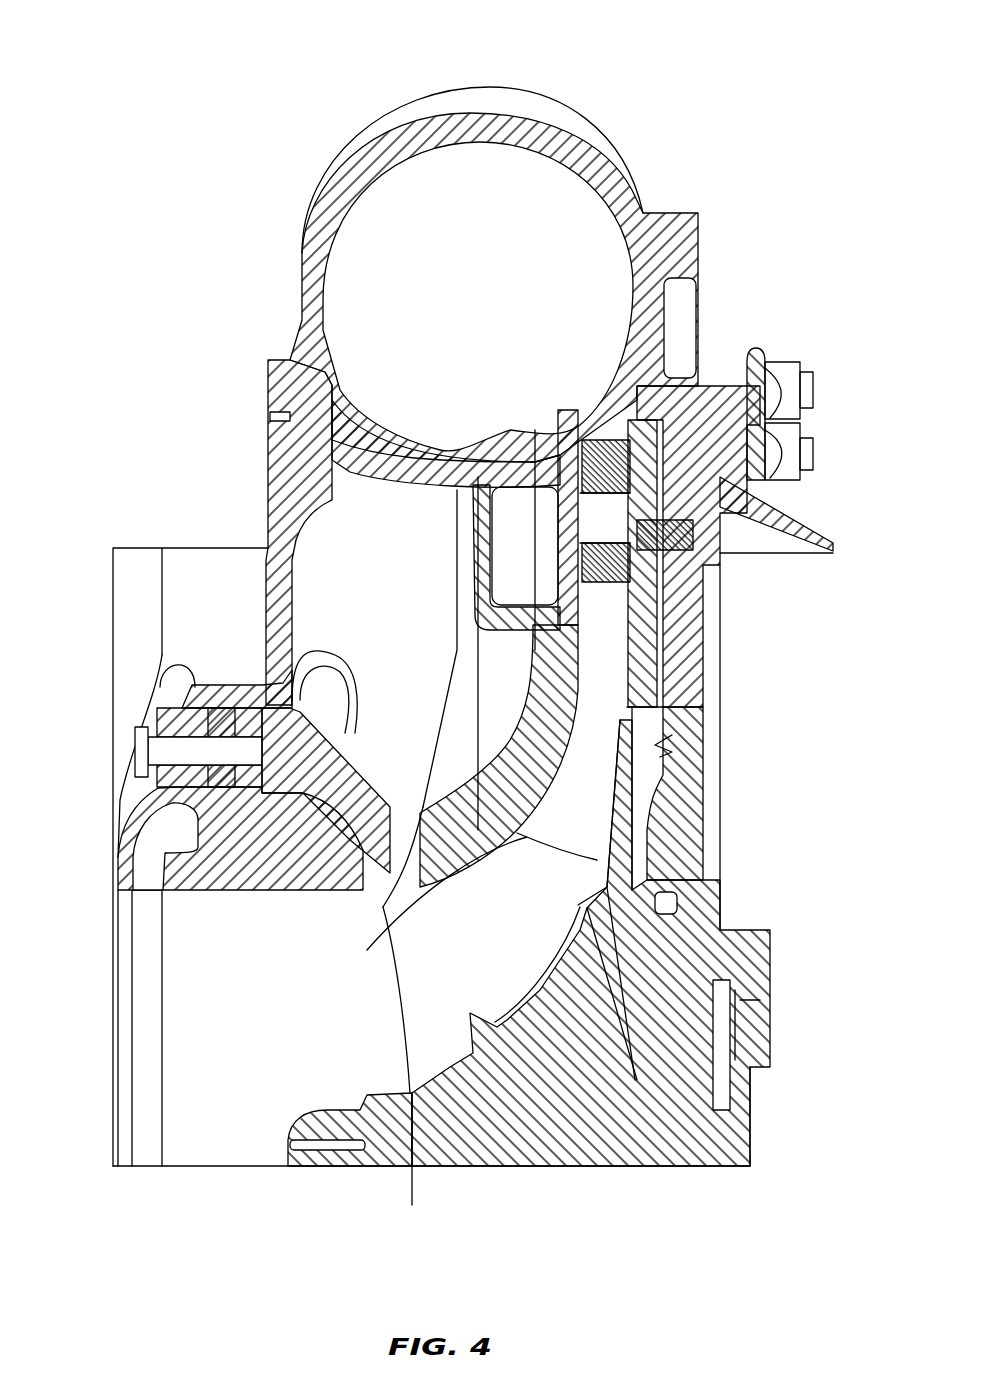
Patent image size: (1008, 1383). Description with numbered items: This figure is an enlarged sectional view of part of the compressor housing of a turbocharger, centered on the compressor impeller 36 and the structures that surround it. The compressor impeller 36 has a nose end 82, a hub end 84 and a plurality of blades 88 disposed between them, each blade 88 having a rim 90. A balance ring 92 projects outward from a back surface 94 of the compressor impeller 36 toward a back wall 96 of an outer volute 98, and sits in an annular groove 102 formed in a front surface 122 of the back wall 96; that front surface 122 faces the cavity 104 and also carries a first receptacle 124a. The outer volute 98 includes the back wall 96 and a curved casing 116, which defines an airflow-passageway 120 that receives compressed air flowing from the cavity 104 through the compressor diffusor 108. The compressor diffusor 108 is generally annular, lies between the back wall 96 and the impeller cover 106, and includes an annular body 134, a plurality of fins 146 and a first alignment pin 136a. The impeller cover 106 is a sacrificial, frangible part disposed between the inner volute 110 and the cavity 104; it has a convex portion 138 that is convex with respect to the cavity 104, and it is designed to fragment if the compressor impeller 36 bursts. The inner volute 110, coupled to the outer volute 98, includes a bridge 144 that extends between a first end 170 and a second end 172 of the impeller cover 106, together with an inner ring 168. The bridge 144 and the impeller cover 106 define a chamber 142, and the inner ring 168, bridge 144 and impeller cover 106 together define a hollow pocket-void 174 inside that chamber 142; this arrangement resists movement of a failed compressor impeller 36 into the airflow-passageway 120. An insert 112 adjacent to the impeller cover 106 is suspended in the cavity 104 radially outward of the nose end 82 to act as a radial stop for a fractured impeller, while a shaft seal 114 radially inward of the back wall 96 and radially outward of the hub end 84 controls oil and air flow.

The curved casing 116 is at (540, 92).
The airflow-passageway 120 is at (430, 223).
The inner ring 168 is at (483, 470).
The outer volute 98 is at (300, 262).
The first end 170 is at (520, 452).
The fins 146 is at (722, 470).
The bridge 144 is at (340, 477).
The chamber 142 is at (440, 677).
The first receptacle 124a is at (703, 497).
The first alignment pin 136a is at (695, 540).
The inner volute 110 is at (262, 635).
The compressor diffusor 108 is at (665, 604).
The annular body 134 is at (648, 654).
The second end 172 is at (257, 728).
The rim 90 is at (630, 712).
The front surface 122 is at (672, 745).
The impeller cover 106 is at (258, 787).
The blades 88 is at (620, 772).
The cavity 104 is at (652, 797).
The back wall 96 is at (692, 832).
The balance ring 92 is at (680, 877).
The insert 112 is at (197, 883).
The annular groove 102 is at (677, 886).
The back surface 94 is at (730, 977).
The shaft seal 114 is at (740, 1078).
The hub end 84 is at (748, 1153).
The nose end 82 is at (295, 1130).
The compressor impeller 36 is at (497, 1135).
The convex portion 138 is at (450, 850).
The pocket-void 174 is at (640, 1090).